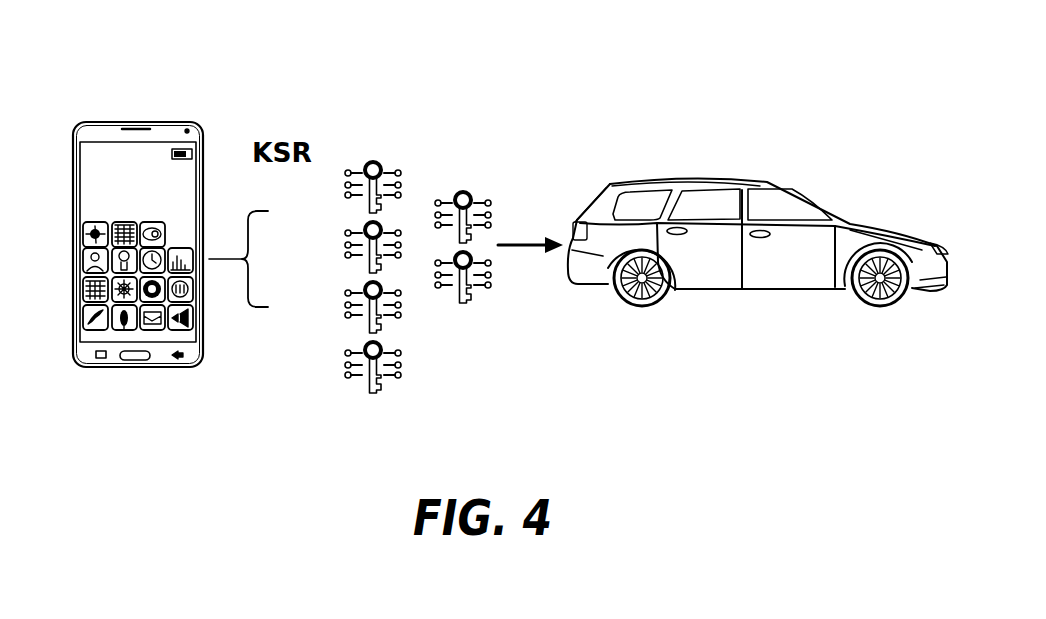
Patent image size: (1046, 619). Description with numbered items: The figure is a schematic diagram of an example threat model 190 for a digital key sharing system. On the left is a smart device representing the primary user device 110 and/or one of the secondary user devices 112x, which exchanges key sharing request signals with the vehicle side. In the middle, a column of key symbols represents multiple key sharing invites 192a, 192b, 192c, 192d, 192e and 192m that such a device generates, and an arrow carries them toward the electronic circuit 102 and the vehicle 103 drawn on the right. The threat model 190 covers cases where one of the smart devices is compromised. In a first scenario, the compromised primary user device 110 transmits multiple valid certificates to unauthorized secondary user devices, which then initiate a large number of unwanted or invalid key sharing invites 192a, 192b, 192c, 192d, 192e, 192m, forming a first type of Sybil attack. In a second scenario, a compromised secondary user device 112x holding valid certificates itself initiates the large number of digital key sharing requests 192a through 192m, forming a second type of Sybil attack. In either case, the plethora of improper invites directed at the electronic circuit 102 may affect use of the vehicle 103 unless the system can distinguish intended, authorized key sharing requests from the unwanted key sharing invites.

The primary user device 110 is at (129, 204).
The secondary user device 112x is at (135, 120).
The threat model 190 is at (543, 64).
The key sharing invite 192a is at (372, 160).
The key sharing invite 192b is at (346, 245).
The key sharing invite 192c is at (346, 305).
The key sharing invite 192d is at (373, 393).
The key sharing invite 192e is at (463, 190).
The key sharing invite 192m is at (463, 303).
The electronic circuit 102 is at (758, 203).
The vehicle 103 is at (688, 180).